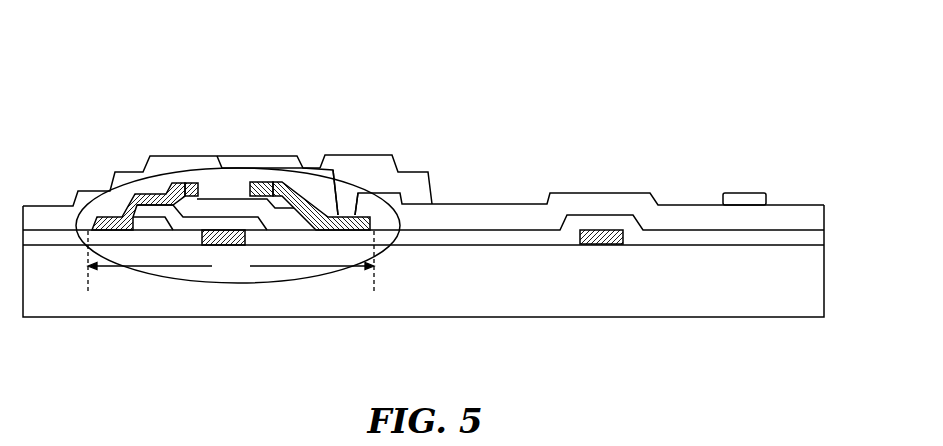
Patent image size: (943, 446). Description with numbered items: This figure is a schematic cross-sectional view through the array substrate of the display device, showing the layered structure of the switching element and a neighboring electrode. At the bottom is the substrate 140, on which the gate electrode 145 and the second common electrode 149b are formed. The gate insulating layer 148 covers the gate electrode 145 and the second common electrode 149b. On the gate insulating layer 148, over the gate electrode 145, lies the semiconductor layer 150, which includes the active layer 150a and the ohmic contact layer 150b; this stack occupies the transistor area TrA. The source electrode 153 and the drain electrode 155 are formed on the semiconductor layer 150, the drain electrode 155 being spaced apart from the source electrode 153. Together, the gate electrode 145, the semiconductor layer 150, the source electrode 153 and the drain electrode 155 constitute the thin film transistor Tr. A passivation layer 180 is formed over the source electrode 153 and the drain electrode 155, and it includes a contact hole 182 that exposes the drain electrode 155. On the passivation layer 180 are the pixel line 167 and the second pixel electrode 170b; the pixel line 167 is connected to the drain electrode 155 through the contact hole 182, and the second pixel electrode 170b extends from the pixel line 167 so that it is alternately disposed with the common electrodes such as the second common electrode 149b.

The substrate 140 is at (780, 291).
The gate electrode 145 is at (218, 246).
The gate insulating layer 148 is at (437, 237).
The second common electrode 149b is at (597, 232).
The semiconductor layer 150 is at (203, 75).
The active layer 150a is at (222, 207).
The ohmic contact layer 150b is at (191, 182).
The source electrode 153 is at (174, 180).
The drain electrode 155 is at (283, 181).
The pixel line 167 is at (385, 155).
The second pixel electrode 170b is at (748, 193).
The passivation layer 180 is at (470, 215).
The contact hole 182 is at (343, 188).
The thin film transistor Tr is at (306, 279).
The transistor area TrA is at (231, 261).